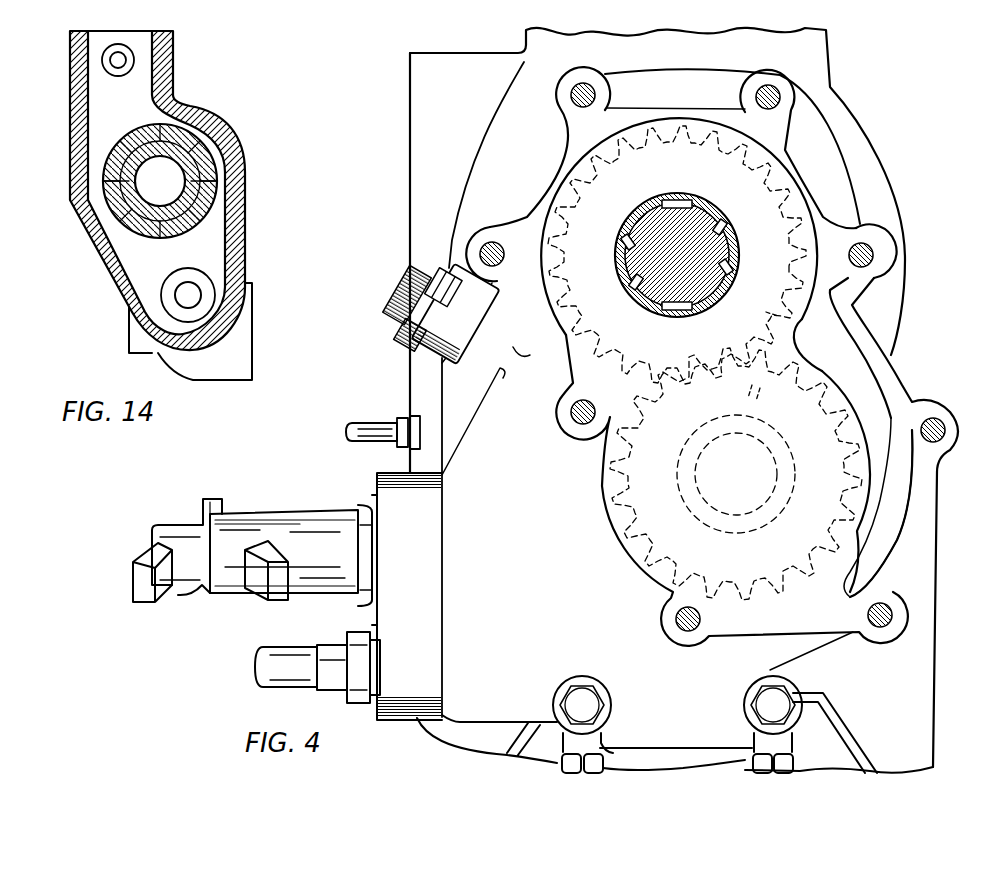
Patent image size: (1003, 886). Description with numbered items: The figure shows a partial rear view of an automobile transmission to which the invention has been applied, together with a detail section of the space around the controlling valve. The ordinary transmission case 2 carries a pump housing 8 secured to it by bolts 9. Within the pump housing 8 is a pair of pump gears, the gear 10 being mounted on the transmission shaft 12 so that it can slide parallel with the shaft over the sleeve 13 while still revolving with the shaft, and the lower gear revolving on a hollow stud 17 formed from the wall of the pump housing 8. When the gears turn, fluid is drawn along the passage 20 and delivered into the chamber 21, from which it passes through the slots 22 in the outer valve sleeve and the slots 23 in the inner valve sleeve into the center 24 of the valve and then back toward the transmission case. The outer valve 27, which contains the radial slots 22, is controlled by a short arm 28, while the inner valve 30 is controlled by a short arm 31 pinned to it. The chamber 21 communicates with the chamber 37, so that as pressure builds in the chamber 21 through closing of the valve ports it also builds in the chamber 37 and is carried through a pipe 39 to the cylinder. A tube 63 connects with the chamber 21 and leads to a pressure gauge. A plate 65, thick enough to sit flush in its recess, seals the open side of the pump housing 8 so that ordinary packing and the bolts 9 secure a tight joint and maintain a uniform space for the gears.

In FIG. 4, the transmission case 2 is at (925, 558).
In FIG. 4, the pump housing 8 is at (800, 178).
In FIG. 4, the bolts 9 is at (572, 94).
In FIG. 4, the gear 10 is at (766, 312).
In FIG. 4, the transmission shaft 12 is at (645, 269).
In FIG. 4, the sleeve 13 is at (731, 233).
In FIG. 4, the hollow stud 17 is at (758, 425).
In FIG. 4, the passage 20 is at (903, 486).
In FIG. 14, the chamber 21 is at (112, 90).
In FIG. 14, the slots 22 is at (193, 153).
In FIG. 14, the slots 23 is at (204, 148).
In FIG. 14, the center of the valve 24 is at (160, 181).
In FIG. 14, the outer valve 27 is at (209, 201).
In FIG. 4, the short arm 28 is at (250, 525).
In FIG. 14, the inner valve 30 is at (109, 201).
In FIG. 4, the short arm 31 is at (165, 530).
In FIG. 14, the chamber 37 is at (208, 253).
In FIG. 14, the pipe 39 is at (175, 296).
In FIG. 4, the pipe 39 is at (270, 662).
In FIG. 14, the tube 63 is at (128, 60).
In FIG. 4, the tube 63 is at (374, 428).
In FIG. 4, the plate 65 is at (783, 342).